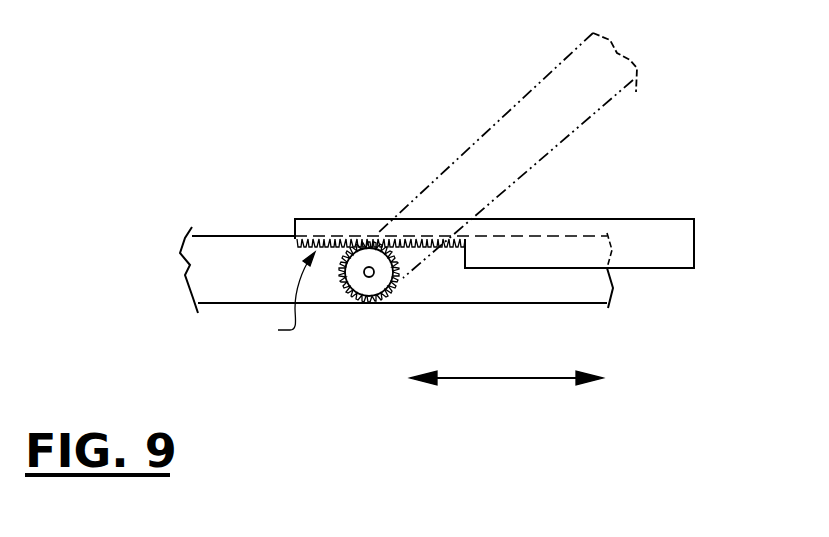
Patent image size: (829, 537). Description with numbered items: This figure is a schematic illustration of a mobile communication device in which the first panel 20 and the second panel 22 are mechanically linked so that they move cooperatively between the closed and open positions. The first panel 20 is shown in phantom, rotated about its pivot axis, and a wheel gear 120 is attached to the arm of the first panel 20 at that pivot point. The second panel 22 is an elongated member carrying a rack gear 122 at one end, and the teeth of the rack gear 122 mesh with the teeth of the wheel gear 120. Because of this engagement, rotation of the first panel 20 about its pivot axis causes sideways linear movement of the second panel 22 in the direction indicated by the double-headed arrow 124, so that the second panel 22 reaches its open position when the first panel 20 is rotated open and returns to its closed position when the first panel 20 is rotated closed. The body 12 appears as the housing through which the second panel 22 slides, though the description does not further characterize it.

The housing body 12 is at (588, 297).
The first panel 20 is at (524, 105).
The second panel 22 is at (637, 218).
The wheel gear 120 is at (372, 287).
The rack gear 122 is at (272, 300).
The arrow 124 is at (475, 380).